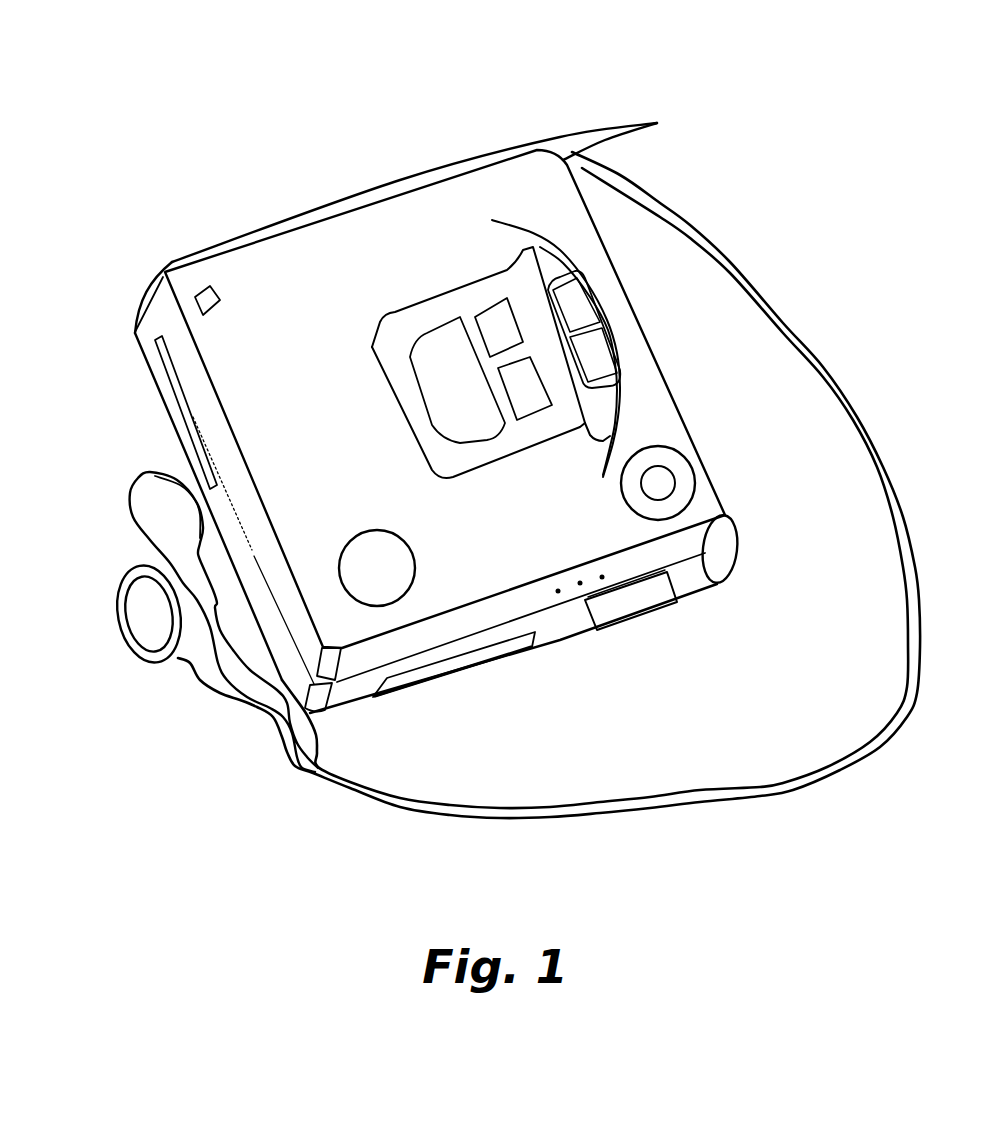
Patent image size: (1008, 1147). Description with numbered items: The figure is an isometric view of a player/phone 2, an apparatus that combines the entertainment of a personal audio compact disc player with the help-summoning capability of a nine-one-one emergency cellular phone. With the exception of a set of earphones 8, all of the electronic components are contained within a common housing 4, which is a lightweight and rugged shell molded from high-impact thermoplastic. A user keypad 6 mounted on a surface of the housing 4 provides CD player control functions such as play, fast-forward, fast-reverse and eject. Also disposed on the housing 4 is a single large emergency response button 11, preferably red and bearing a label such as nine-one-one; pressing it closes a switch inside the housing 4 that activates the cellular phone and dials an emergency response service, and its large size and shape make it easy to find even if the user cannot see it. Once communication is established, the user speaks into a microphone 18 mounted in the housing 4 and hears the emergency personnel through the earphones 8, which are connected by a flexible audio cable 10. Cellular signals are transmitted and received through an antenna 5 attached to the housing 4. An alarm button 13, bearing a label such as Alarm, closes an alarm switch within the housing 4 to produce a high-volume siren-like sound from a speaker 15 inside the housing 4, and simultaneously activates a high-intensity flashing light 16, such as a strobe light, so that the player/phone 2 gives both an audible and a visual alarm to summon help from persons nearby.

The player/phone 2 is at (806, 78).
The housing 4 is at (133, 318).
The antenna 5 is at (593, 128).
The user keypad 6 is at (615, 350).
The earphones 8 is at (120, 583).
The flexible audio cable 10 is at (823, 367).
The emergency response button 11 is at (377, 607).
The alarm button 13 is at (628, 617).
The speaker 15 is at (693, 474).
The flashing light 16 is at (740, 540).
The microphone 18 is at (217, 293).